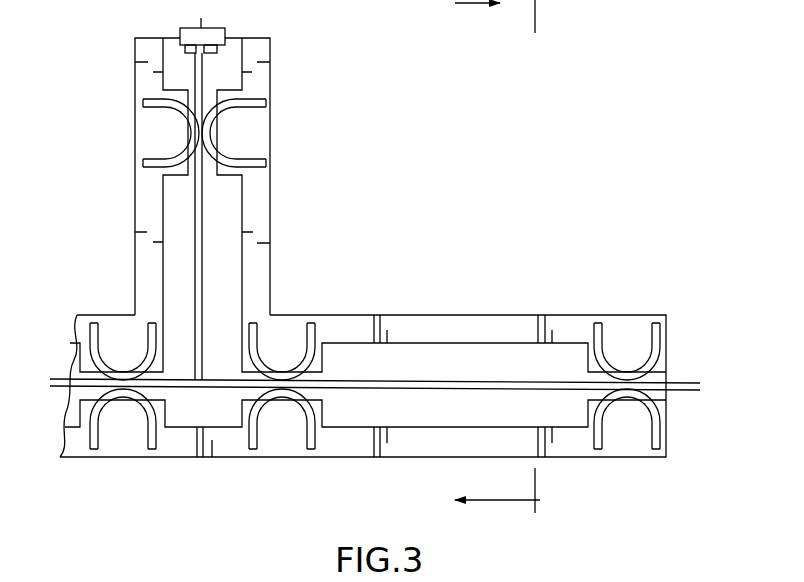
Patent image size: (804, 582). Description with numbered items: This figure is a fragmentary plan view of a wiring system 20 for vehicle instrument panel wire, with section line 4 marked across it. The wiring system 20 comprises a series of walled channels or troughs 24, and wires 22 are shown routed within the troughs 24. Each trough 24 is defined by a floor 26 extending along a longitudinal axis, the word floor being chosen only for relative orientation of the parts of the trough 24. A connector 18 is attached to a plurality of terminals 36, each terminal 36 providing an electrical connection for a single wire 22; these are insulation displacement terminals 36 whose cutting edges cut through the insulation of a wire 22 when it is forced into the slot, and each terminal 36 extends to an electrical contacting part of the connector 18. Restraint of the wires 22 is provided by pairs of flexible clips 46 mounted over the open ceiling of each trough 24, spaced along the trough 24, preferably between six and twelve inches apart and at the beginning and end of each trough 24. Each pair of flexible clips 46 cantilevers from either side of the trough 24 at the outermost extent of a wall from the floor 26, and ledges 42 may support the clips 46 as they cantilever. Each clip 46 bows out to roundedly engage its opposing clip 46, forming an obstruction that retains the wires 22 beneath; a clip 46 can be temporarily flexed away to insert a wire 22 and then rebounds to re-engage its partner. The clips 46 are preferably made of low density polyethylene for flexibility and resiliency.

The section line 4- 4 is at (497, 256).
The connector 18 is at (221, 27).
The wiring system 20 is at (392, 89).
The wire 22 is at (195, 268).
The trough 24 is at (223, 236).
The floor 26 is at (233, 198).
The terminal 36 is at (218, 43).
The ledge 42 is at (158, 127).
The flexible clip 46 is at (152, 160).